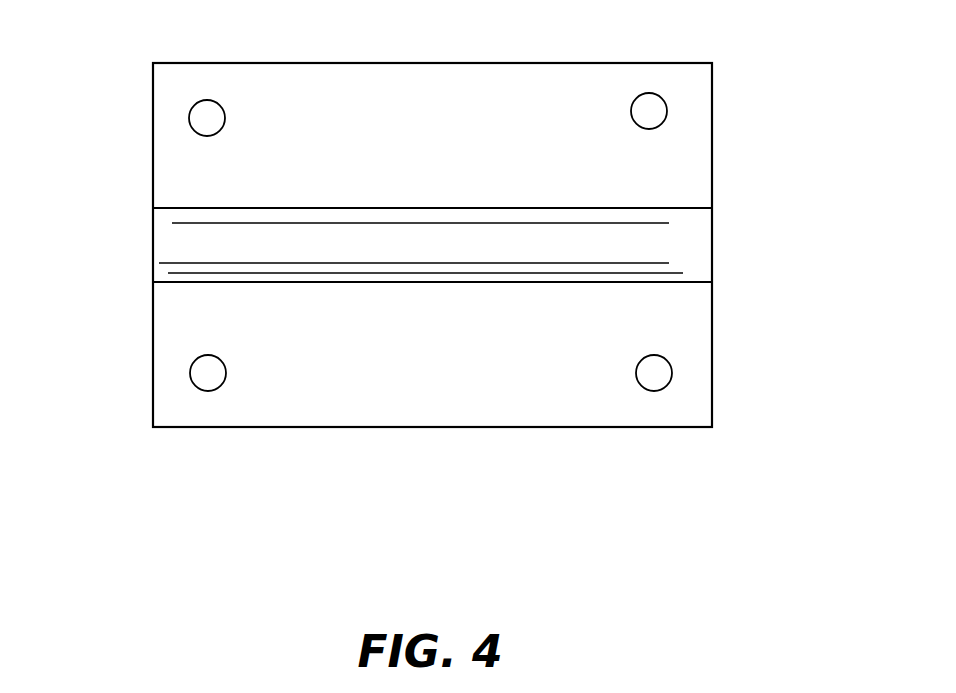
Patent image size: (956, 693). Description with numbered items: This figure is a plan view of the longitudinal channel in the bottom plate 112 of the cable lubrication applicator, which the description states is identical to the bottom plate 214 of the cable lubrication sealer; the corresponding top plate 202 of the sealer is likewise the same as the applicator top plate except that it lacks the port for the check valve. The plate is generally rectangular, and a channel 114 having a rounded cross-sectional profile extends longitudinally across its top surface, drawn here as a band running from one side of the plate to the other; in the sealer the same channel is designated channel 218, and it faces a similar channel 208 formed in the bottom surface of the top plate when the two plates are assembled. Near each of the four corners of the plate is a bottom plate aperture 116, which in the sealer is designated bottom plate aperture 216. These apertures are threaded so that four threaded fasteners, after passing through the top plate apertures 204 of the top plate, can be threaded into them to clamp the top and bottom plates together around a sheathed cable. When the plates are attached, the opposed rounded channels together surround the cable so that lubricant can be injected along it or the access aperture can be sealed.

The bottom plate 214 is at (432, 304).
The top plate 202 is at (432, 304).
The bottom plate 112 is at (328, 428).
The channel 218 is at (503, 220).
The channel 208 is at (503, 220).
The channel 114 is at (693, 263).
The bottom plate apertures 216 is at (444, 218).
The top plate apertures 204 is at (444, 218).
The bottom plate apertures 116 is at (772, 353).